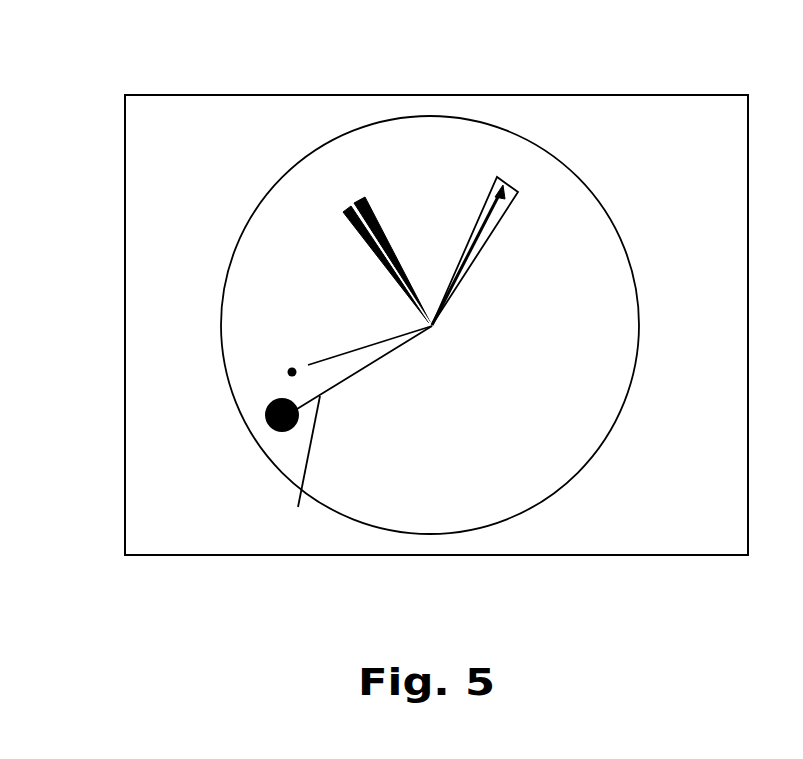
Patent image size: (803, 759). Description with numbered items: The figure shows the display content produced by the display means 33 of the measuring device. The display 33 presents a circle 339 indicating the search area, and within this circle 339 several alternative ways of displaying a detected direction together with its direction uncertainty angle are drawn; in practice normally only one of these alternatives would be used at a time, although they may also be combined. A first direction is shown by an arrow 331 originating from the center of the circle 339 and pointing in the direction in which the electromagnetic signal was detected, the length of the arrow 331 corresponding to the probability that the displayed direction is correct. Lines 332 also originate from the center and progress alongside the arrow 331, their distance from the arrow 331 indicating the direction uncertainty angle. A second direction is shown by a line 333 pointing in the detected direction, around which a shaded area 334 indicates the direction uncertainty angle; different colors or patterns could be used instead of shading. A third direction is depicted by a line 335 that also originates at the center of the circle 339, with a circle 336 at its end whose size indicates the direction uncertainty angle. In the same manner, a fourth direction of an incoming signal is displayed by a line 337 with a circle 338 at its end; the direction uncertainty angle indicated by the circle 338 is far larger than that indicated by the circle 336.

The display means 33 is at (125, 535).
The arrow 331 is at (510, 182).
The lines 332 is at (497, 177).
The line 333 is at (352, 204).
The shaded area 334 is at (343, 211).
The line 335 is at (308, 365).
The circle 336 is at (308, 365).
The line 337 is at (299, 468).
The circle 338 is at (270, 430).
The circle 339 is at (615, 425).